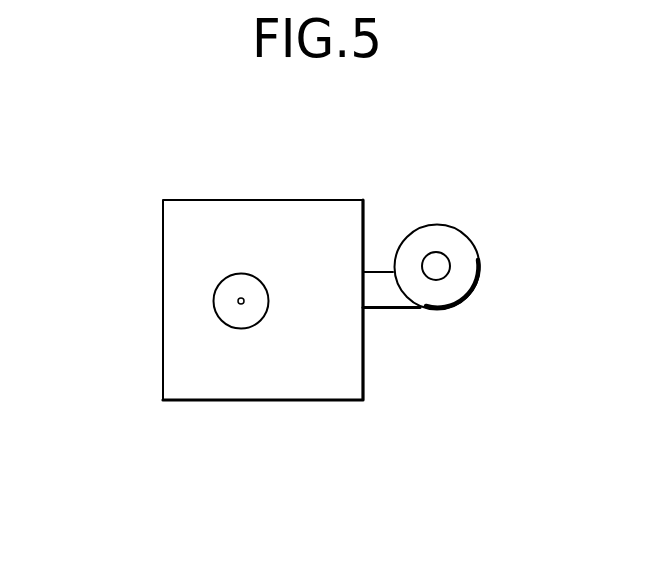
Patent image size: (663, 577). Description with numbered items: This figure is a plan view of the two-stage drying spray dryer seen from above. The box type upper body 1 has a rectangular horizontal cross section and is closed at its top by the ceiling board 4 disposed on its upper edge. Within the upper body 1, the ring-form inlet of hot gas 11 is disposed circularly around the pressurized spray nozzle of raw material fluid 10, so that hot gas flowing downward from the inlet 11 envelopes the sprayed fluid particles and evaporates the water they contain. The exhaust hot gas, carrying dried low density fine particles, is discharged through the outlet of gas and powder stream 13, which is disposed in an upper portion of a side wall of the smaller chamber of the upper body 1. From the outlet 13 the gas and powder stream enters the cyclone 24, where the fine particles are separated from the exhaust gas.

The upper body 1 is at (253, 403).
The ceiling board 4 is at (300, 270).
The rotor 10 is at (238, 299).
The ring-form inlet of hot gas 11 is at (230, 330).
The outlet of gas and powder stream 13 is at (398, 309).
The cyclone 24 is at (452, 278).